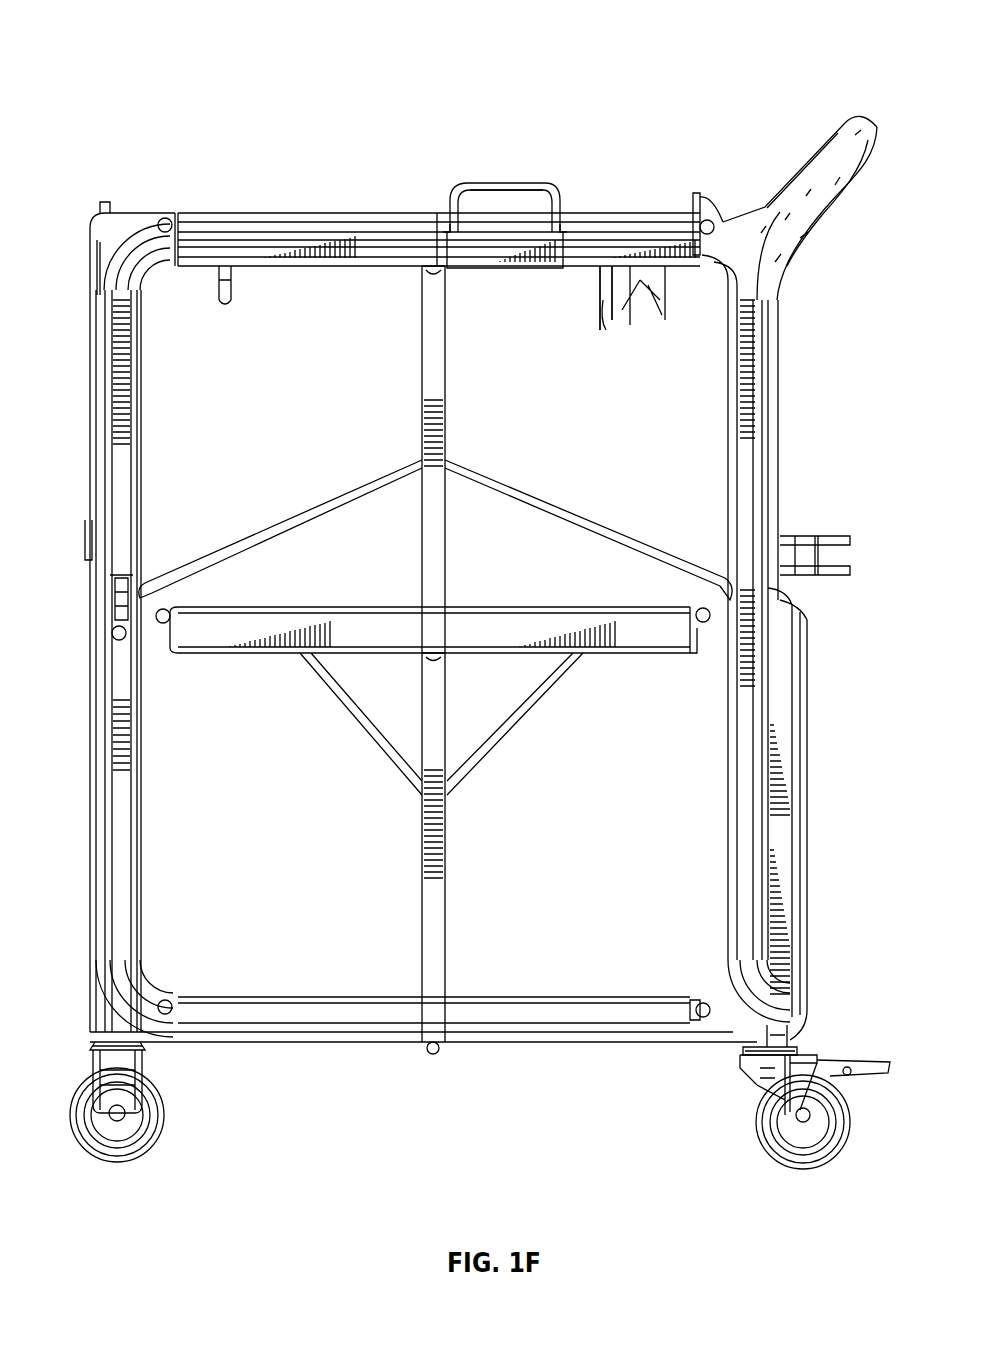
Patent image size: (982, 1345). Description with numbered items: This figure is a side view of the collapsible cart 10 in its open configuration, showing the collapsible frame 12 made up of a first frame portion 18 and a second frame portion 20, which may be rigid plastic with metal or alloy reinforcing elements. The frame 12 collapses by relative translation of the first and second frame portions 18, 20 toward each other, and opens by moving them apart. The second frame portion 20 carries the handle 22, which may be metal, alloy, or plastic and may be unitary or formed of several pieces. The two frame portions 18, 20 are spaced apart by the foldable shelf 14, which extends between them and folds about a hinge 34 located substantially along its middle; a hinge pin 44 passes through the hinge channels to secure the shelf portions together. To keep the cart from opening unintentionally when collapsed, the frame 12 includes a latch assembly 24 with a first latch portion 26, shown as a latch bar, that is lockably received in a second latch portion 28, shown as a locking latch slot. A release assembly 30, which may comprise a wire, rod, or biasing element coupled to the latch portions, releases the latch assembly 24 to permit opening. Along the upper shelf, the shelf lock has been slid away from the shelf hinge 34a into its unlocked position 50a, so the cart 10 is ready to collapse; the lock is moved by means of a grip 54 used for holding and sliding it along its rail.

The collapsible cart 10 is at (120, 55).
The collapsible frame 12 is at (102, 342).
The foldable shelf 14 is at (322, 608).
The first frame portion 18 is at (430, 1160).
The second frame portion 20 is at (775, 1160).
The handle 22 is at (860, 120).
The latch assembly 24 is at (215, 373).
The first latch portion 26 is at (226, 302).
The second latch portion 28 is at (680, 327).
The release assembly 30 is at (612, 288).
The hinge 34 is at (446, 657).
The shelf hinge 34a is at (432, 276).
The hinge pin 44 is at (430, 657).
The unlocked position 50a is at (497, 238).
The grip 54 is at (520, 183).